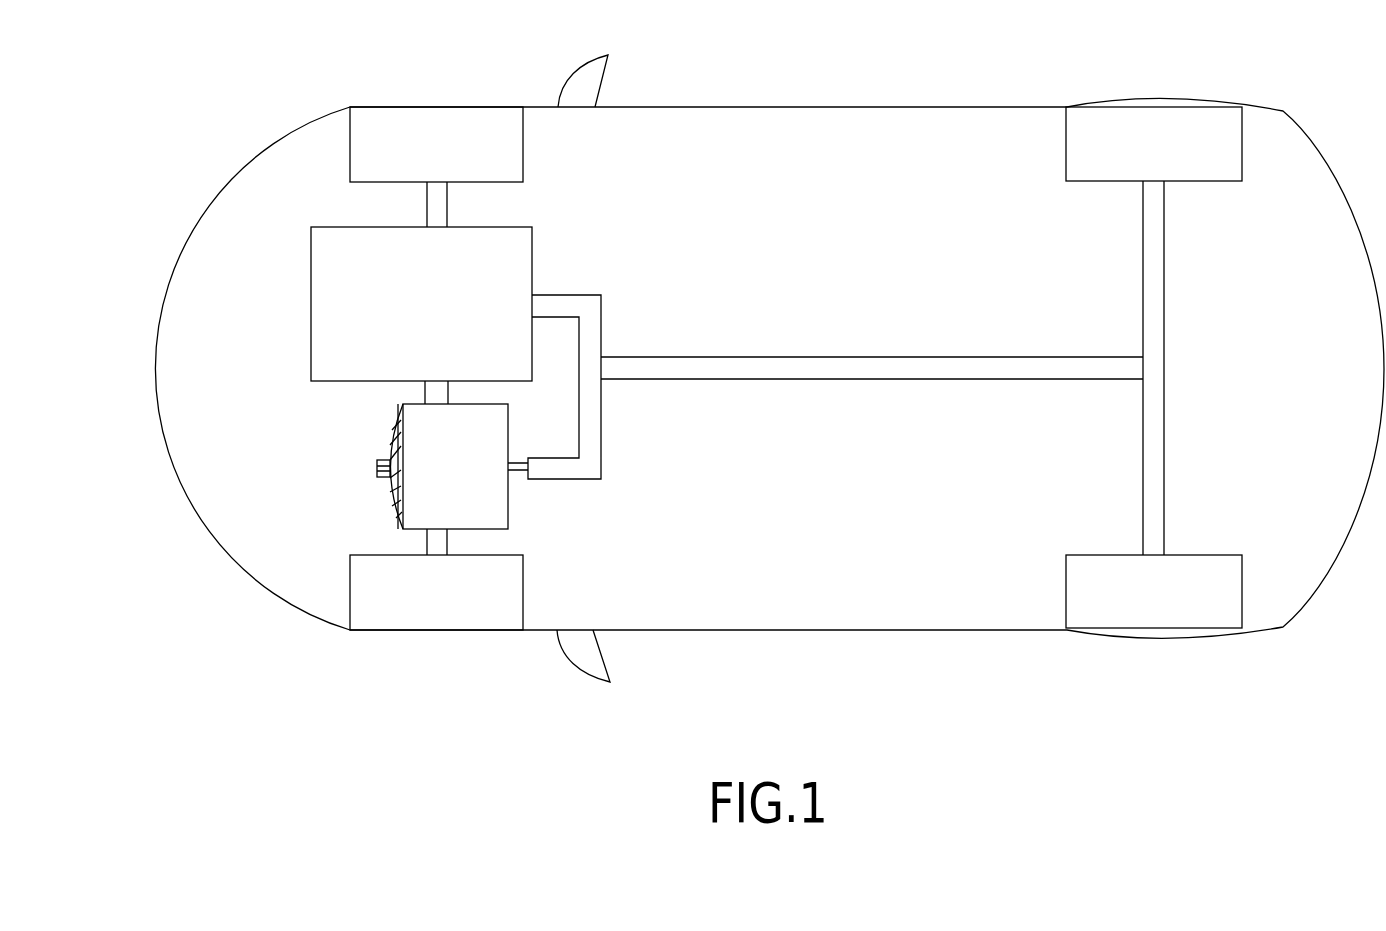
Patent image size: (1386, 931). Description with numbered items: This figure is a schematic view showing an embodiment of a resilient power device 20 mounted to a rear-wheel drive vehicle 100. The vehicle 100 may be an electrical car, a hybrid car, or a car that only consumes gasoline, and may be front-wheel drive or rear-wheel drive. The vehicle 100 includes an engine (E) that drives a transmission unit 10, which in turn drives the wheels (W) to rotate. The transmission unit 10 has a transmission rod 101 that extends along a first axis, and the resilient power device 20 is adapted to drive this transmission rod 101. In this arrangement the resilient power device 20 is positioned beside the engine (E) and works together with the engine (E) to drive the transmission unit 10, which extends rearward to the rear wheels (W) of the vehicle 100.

The vehicle 100 is at (250, 130).
The wheels W is at (510, 147).
The engine E is at (528, 243).
The transmission unit 10 is at (823, 367).
The resilient power device 20 is at (413, 437).
The transmission rod 101 is at (518, 468).